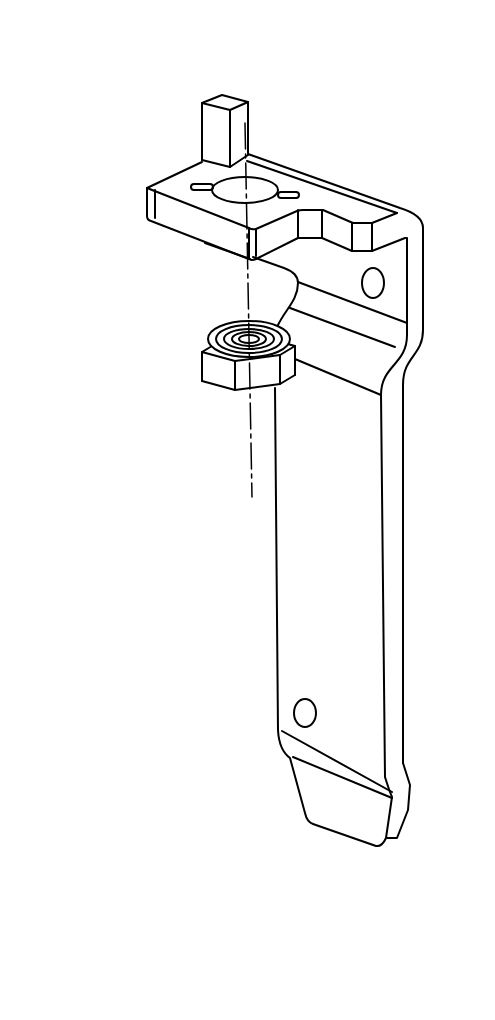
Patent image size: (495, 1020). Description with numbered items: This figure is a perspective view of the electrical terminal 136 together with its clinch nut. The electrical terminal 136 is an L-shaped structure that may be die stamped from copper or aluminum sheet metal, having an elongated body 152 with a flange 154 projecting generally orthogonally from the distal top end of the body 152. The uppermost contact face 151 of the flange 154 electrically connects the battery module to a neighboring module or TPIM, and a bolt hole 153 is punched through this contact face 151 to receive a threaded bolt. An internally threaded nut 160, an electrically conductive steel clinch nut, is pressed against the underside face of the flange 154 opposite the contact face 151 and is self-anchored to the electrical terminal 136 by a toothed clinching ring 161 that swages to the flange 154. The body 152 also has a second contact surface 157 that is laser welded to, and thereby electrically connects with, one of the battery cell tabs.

The electrical terminal 136 is at (383, 88).
The contact face 151 is at (178, 188).
The elongated body 152 is at (272, 555).
The bolt hole 153 is at (257, 190).
The flange 154 is at (160, 205).
The contact surface 157 is at (290, 626).
The internally threaded nut 160 is at (202, 368).
The toothed clinching ring 161 is at (208, 337).